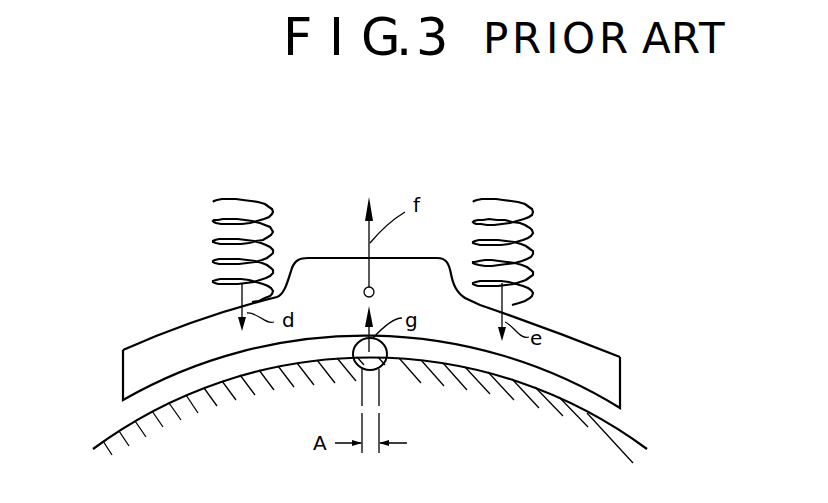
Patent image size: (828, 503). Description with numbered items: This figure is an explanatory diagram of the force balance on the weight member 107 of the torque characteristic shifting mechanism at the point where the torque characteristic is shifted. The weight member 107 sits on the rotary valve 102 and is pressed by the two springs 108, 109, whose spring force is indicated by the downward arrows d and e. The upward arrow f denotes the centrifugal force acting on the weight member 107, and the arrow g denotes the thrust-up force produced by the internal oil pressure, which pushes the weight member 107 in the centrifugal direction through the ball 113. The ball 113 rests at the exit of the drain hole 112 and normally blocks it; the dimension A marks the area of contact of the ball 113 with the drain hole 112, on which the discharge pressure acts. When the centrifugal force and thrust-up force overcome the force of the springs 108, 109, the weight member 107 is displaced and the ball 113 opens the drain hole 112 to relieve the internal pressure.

The rotary valve 102 is at (240, 388).
The weight member 107 is at (321, 270).
The spring 108 is at (218, 222).
The spring 109 is at (533, 212).
The drain hole 112 is at (373, 392).
The ball 113 is at (356, 372).